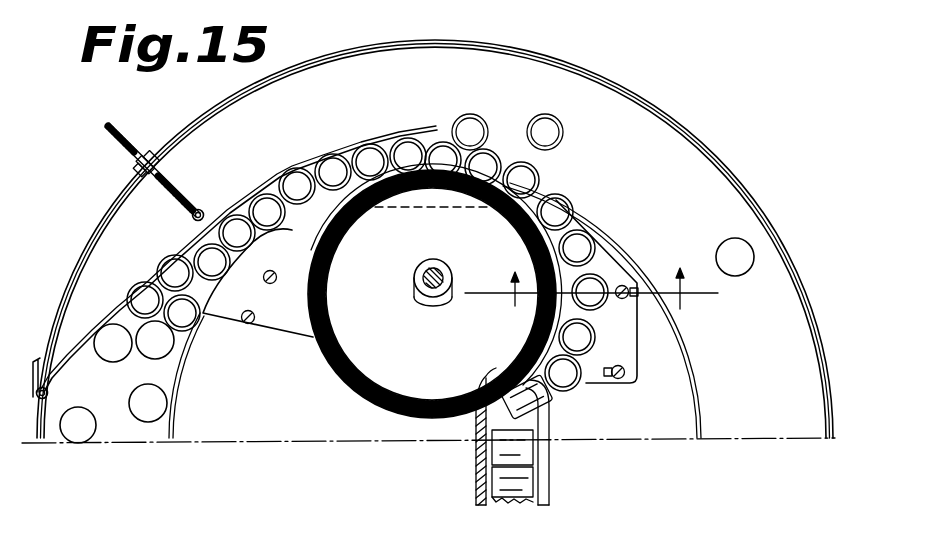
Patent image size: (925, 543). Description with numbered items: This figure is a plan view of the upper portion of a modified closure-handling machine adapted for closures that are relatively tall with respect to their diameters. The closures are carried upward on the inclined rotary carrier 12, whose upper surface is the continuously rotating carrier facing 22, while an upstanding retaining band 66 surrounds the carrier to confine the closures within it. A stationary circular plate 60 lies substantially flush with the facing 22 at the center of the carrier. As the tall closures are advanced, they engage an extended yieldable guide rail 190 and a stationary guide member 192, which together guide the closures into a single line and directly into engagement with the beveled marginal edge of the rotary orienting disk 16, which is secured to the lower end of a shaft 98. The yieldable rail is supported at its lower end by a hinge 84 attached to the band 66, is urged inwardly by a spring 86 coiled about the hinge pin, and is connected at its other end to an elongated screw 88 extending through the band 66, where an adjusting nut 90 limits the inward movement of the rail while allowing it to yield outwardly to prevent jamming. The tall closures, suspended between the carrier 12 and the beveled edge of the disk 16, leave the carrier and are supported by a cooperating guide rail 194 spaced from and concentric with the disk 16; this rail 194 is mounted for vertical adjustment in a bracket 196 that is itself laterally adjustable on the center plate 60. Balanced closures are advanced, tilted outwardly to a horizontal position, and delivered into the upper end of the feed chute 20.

The rotary carrier 12 is at (105, 266).
The orienting disk 16 is at (364, 378).
The feed chute 20 is at (547, 465).
The carrier facing 22 is at (117, 438).
The circular plate 60 is at (211, 375).
The retaining band 66 is at (667, 120).
The hinge 84 is at (50, 393).
The spring 86 is at (60, 354).
The elongated screw 88 is at (120, 138).
The adjusting nut 90 is at (138, 152).
The shaft 98 is at (427, 270).
The extended yieldable guide rail 190 is at (268, 180).
The stationary guide member 192 is at (327, 158).
The guide rail 194 is at (548, 196).
The bracket 196 is at (592, 386).